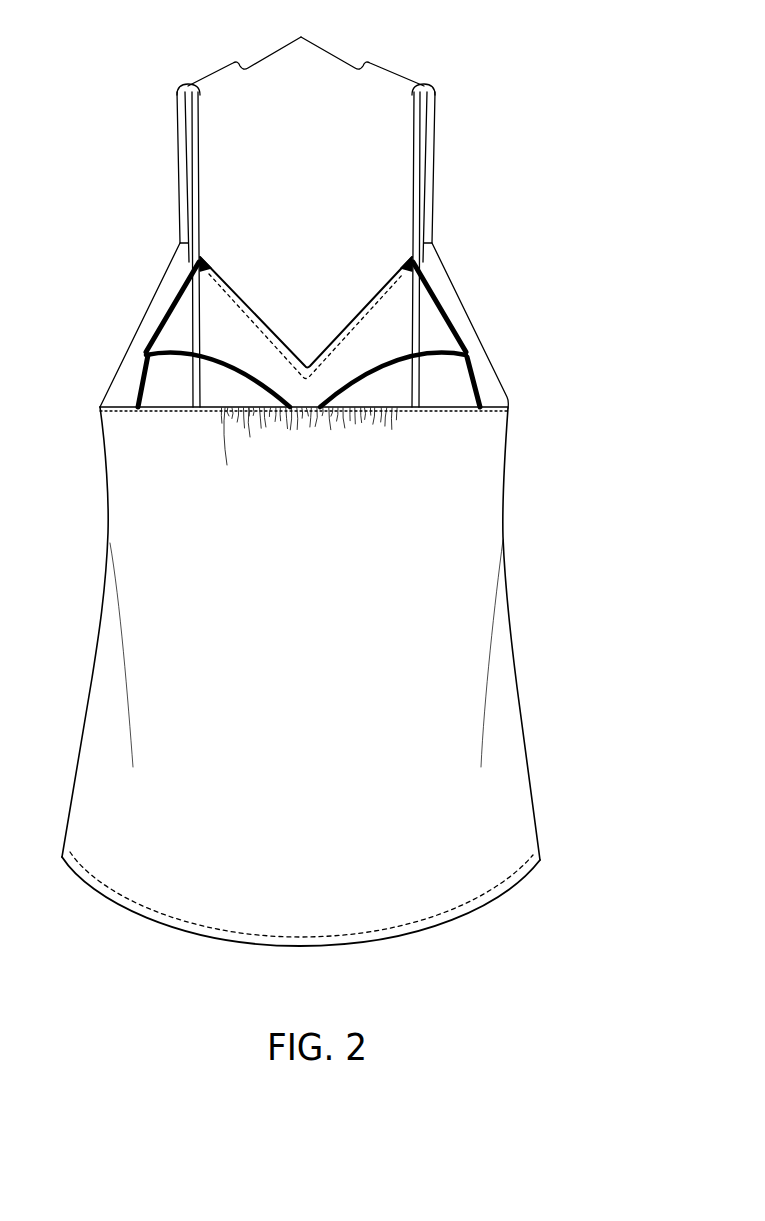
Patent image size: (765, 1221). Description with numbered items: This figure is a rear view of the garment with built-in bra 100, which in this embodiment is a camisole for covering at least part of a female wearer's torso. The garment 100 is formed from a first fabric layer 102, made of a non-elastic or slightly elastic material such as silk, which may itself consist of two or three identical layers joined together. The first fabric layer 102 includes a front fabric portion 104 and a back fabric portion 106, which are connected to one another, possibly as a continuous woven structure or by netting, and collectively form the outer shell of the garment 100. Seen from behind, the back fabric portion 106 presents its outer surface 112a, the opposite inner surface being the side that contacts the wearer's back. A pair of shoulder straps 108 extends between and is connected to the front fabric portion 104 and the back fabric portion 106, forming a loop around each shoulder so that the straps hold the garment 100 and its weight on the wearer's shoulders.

The garment with built-in bra 100 is at (611, 974).
The first fabric layer 102 is at (518, 437).
The front fabric portion 104 is at (473, 332).
The back fabric portion 106 is at (503, 783).
The pair of shoulder straps 108 is at (306, 48).
The outer surface 112a is at (344, 616).